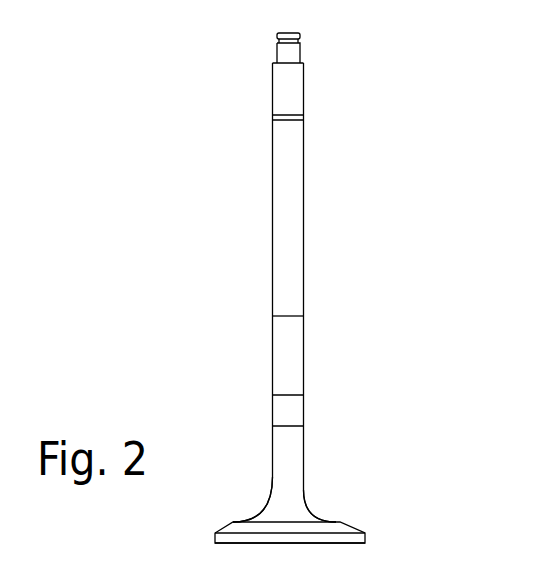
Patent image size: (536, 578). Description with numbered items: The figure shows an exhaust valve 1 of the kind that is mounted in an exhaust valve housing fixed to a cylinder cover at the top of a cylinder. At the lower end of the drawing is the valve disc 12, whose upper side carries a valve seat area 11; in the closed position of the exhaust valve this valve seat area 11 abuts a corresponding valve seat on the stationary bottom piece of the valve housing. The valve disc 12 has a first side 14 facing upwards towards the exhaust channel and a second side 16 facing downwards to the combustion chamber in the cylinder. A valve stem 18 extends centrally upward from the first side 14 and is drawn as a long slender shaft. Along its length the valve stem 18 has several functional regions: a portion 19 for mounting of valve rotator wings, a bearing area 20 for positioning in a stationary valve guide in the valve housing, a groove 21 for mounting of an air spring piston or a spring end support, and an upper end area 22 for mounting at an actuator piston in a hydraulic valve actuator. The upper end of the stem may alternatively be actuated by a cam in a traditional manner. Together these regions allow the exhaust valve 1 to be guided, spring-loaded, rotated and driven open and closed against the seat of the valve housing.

The exhaust valve 1 is at (271, 174).
The valve seat area 11 is at (352, 524).
The valve disc 12 is at (347, 538).
The first side 14 is at (323, 517).
The second side 16 is at (263, 544).
The valve stem 18 is at (272, 477).
The portion for mounting of valve rotator wings 19 is at (290, 415).
The bearing area 20 is at (285, 230).
The groove 21 is at (304, 118).
The upper end area 22 is at (290, 53).